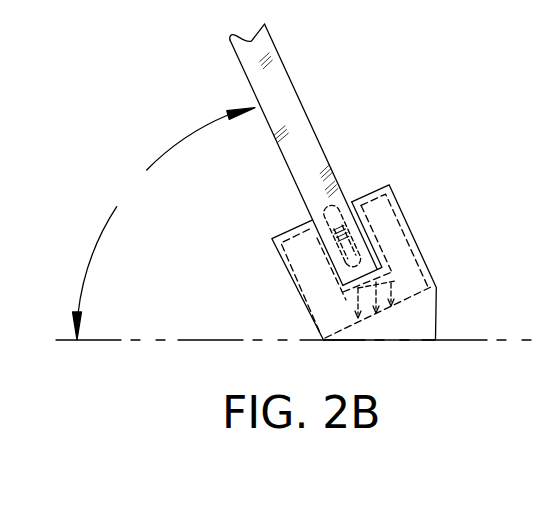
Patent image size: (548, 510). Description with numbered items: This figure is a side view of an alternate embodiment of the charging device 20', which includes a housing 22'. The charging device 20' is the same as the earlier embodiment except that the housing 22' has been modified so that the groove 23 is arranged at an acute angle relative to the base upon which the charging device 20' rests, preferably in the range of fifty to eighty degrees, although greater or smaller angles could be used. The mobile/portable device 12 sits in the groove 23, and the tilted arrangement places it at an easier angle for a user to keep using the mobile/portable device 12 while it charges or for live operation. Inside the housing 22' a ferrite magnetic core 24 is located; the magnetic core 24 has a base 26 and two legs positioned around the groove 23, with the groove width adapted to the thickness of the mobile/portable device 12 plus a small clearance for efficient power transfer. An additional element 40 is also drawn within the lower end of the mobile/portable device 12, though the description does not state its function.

The mobile/portable device 12 is at (278, 88).
The insert element within rod end 40 is at (340, 190).
The groove 23 is at (343, 203).
The magnetic core 24 is at (403, 208).
The base 26 is at (398, 281).
The charging device 20' is at (402, 262).
The housing 22' is at (298, 360).